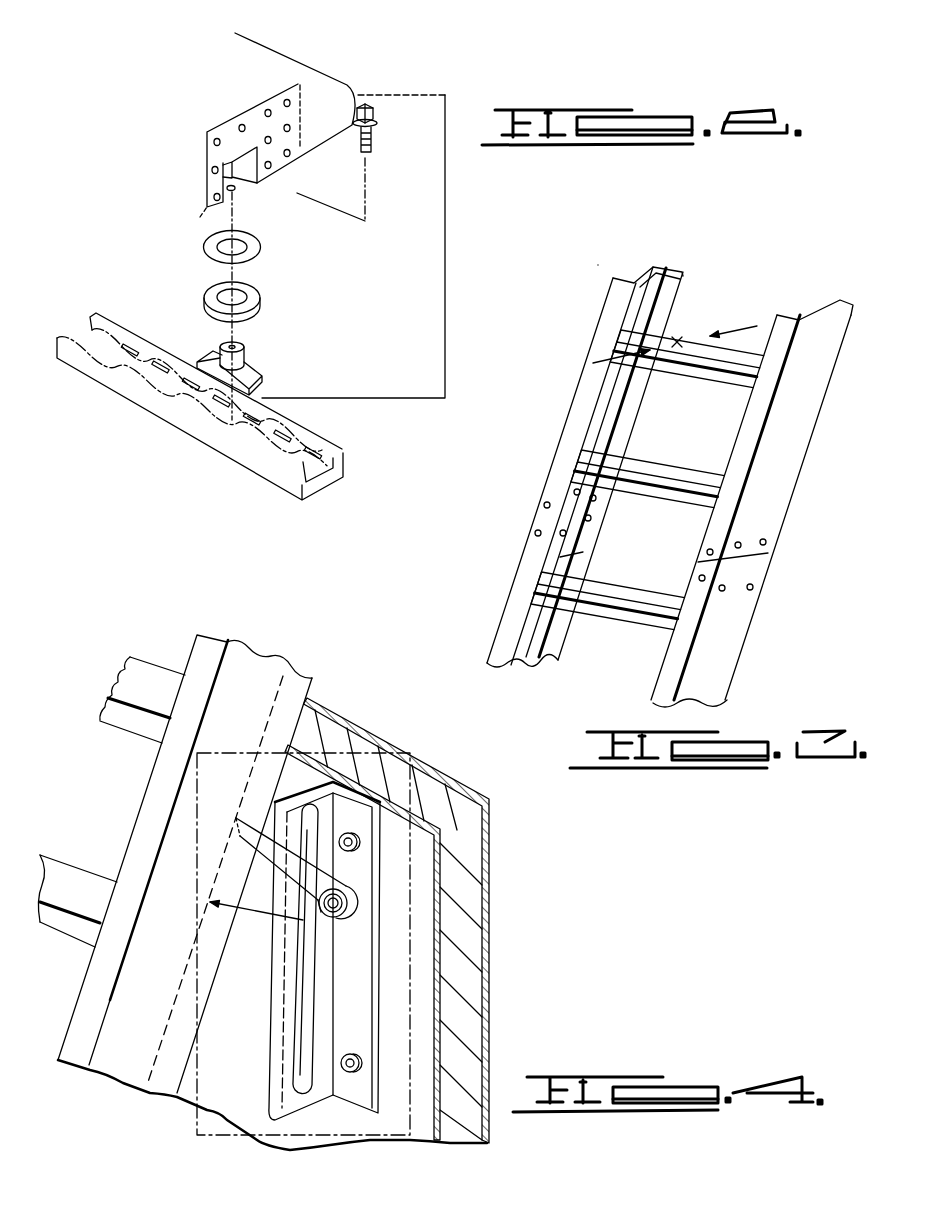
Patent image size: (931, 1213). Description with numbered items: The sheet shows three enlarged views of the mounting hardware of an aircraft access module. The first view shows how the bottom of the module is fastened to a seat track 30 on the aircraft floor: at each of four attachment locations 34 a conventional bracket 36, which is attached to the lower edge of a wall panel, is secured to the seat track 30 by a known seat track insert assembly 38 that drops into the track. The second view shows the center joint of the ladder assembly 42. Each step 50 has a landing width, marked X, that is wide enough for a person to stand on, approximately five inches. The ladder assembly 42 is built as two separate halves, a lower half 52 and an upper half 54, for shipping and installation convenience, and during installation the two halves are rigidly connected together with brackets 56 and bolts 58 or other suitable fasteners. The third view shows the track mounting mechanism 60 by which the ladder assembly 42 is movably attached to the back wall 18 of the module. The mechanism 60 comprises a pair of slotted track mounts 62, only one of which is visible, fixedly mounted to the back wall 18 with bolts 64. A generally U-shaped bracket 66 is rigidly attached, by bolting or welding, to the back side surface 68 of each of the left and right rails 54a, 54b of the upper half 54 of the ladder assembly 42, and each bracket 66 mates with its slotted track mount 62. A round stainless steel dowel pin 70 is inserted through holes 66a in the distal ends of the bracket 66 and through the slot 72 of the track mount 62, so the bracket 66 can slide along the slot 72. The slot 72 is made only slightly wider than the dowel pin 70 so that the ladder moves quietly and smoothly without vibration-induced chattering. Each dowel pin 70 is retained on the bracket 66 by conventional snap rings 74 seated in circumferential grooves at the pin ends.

In FIG. 4, the back wall 18 is at (382, 733).
In FIG. 2, the seat track 30 is at (130, 388).
In FIG. 2, the attachment location 34 is at (340, 48).
In FIG. 2, the bracket 36 is at (257, 117).
In FIG. 2, the seat track insert assembly 38 is at (445, 233).
In FIG. 3, the ladder assembly 42 is at (643, 483).
In FIG. 4, the ladder assembly 42 is at (147, 783).
In FIG. 3, the step 50 is at (675, 336).
In FIG. 3, the lower half of ladder assembly 52 is at (495, 615).
In FIG. 3, the upper half of ladder assembly 54 is at (790, 520).
In FIG. 3, the left rail 54a is at (750, 413).
In FIG. 3, the right rail 54b is at (607, 323).
In FIG. 3, the bracket 56 is at (560, 547).
In FIG. 3, the bolt 58 is at (750, 587).
In FIG. 4, the track mounting mechanism 60 is at (420, 997).
In FIG. 4, the slotted track mount 62 is at (285, 1112).
In FIG. 4, the bolt 64 is at (358, 840).
In FIG. 4, the U-shaped bracket 66 is at (295, 897).
In FIG. 4, the hole 66a is at (315, 918).
In FIG. 4, the back side surface 68 is at (298, 680).
In FIG. 4, the dowel pin 70 is at (350, 909).
In FIG. 4, the slot 72 is at (303, 1013).
In FIG. 4, the snap ring 74 is at (352, 893).